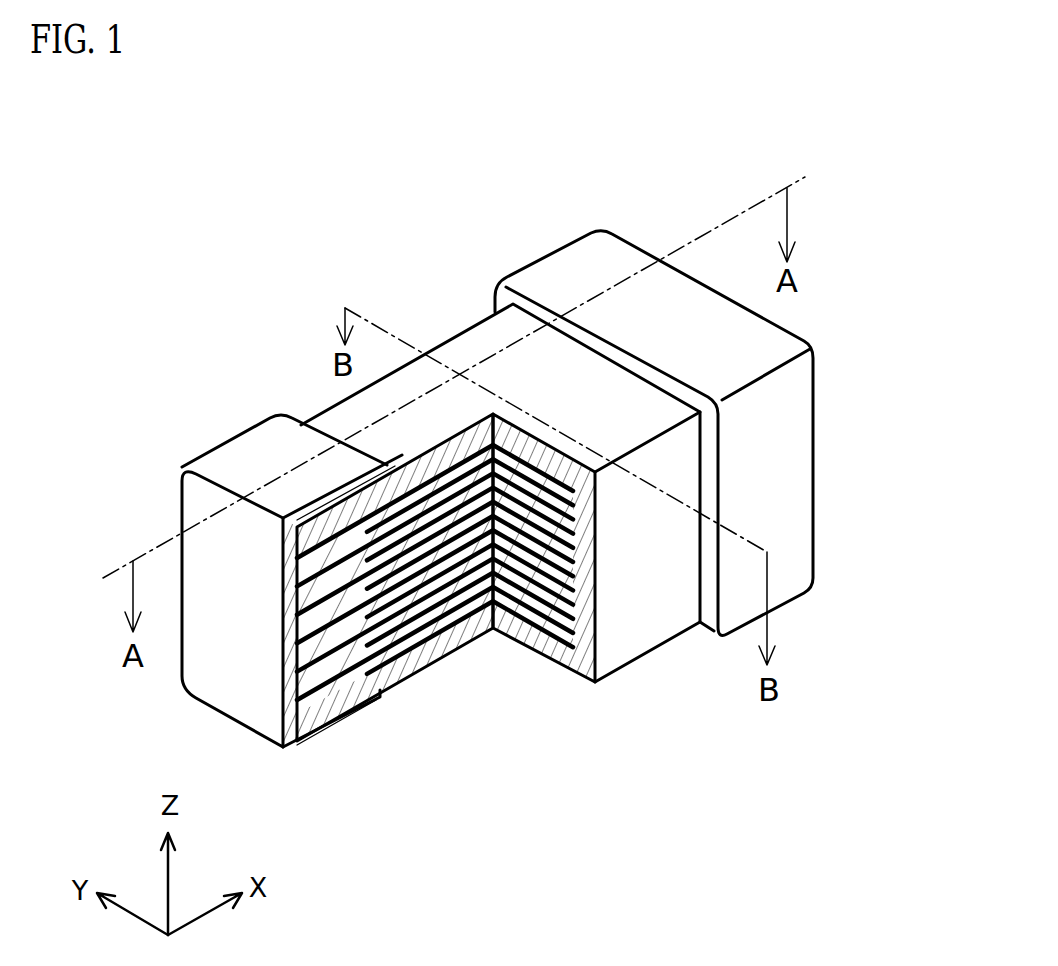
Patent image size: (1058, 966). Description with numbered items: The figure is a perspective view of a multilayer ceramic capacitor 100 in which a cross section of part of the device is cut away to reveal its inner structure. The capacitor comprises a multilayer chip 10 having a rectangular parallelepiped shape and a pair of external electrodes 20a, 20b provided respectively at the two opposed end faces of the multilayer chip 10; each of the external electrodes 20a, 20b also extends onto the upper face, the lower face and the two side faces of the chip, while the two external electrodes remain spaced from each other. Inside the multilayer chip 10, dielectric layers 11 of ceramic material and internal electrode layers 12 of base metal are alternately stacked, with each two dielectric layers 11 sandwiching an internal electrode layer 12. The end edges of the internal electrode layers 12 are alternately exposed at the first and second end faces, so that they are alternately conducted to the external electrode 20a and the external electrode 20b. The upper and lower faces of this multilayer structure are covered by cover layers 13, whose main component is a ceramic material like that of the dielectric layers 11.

The multilayer ceramic capacitor 100 is at (918, 163).
The multilayer chip 10 is at (470, 539).
The dielectric layer 11 is at (425, 615).
The internal electrode layer 12 is at (484, 635).
The cover layer 13 is at (463, 350).
The external electrode 20a is at (213, 446).
The external electrode 20b is at (553, 273).